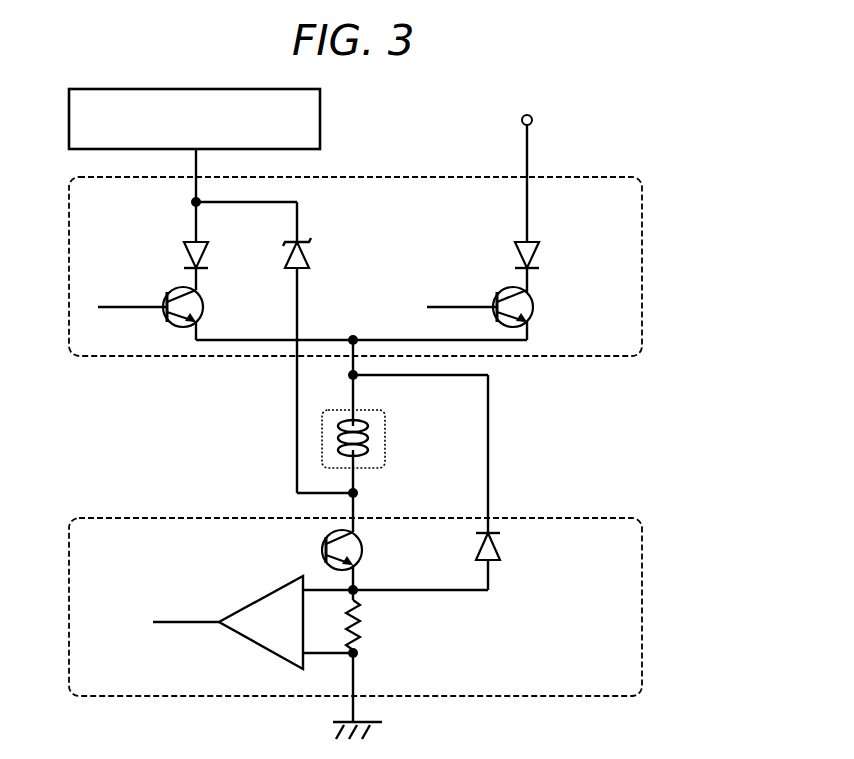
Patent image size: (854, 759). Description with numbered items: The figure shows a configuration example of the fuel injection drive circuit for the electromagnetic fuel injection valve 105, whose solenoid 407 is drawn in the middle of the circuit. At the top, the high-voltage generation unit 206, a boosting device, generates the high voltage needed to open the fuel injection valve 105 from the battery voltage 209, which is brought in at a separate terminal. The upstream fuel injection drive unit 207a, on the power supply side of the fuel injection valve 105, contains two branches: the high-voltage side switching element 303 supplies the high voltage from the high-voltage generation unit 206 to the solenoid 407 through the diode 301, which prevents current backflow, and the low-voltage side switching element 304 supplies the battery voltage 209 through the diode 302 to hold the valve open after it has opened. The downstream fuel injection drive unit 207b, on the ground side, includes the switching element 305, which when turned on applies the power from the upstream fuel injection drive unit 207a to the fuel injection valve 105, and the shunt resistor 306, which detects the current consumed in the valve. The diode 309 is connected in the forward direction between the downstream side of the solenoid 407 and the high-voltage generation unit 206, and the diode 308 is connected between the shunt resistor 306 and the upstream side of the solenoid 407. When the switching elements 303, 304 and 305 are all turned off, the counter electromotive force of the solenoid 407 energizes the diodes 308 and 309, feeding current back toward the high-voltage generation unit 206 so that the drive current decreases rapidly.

The high-voltage generation unit 206 is at (103, 88).
The battery voltage 209 is at (534, 118).
The fuel injection drive unit 207a is at (643, 228).
The fuel injection drive unit 207b is at (643, 546).
The diode 301 is at (183, 244).
The diode 302 is at (540, 250).
The high-voltage side switching element 303 is at (207, 305).
The low-voltage side switching element 304 is at (538, 305).
The diode 309 is at (309, 258).
The fuel injection valve 105 is at (386, 422).
The solenoid 407 is at (370, 453).
The switching element 305 is at (364, 548).
The shunt resistor 306 is at (364, 622).
The diode 308 is at (500, 555).